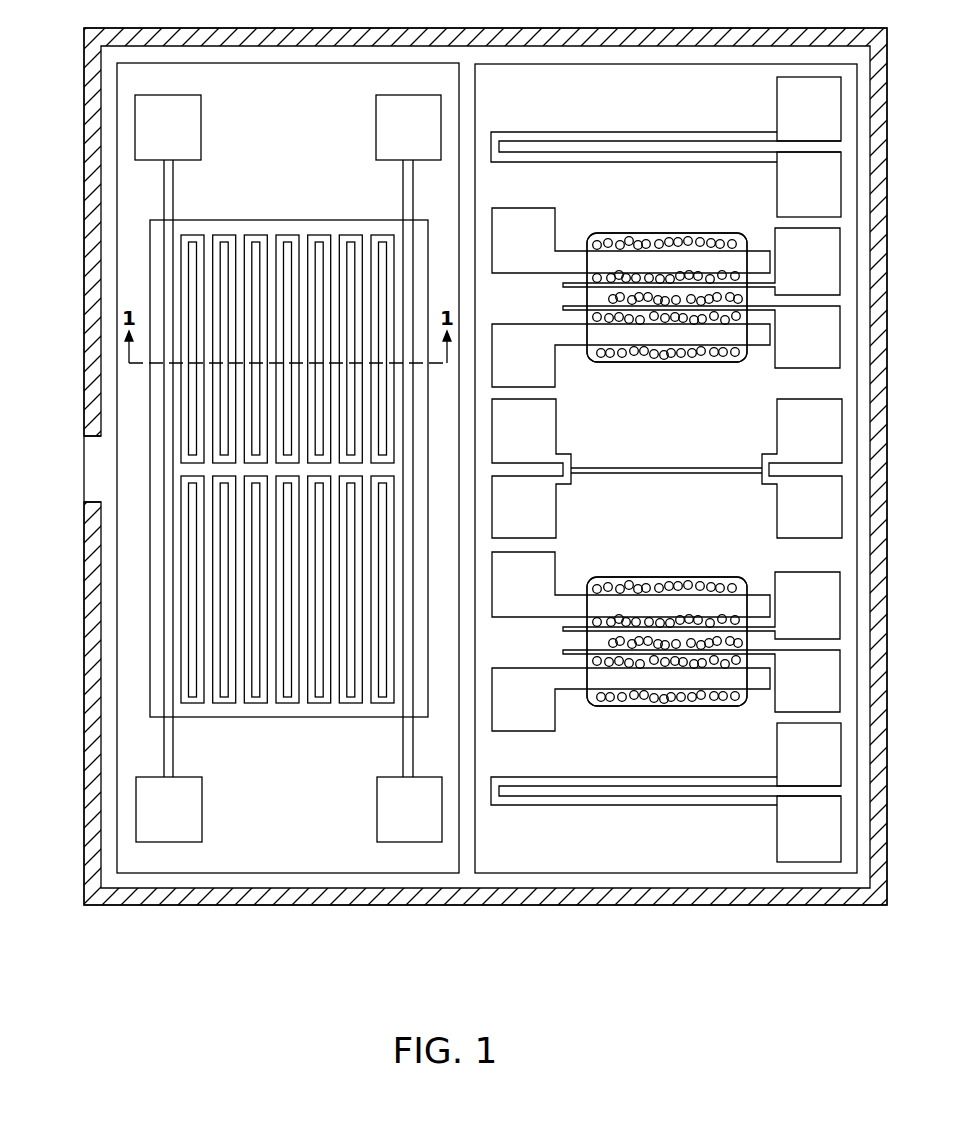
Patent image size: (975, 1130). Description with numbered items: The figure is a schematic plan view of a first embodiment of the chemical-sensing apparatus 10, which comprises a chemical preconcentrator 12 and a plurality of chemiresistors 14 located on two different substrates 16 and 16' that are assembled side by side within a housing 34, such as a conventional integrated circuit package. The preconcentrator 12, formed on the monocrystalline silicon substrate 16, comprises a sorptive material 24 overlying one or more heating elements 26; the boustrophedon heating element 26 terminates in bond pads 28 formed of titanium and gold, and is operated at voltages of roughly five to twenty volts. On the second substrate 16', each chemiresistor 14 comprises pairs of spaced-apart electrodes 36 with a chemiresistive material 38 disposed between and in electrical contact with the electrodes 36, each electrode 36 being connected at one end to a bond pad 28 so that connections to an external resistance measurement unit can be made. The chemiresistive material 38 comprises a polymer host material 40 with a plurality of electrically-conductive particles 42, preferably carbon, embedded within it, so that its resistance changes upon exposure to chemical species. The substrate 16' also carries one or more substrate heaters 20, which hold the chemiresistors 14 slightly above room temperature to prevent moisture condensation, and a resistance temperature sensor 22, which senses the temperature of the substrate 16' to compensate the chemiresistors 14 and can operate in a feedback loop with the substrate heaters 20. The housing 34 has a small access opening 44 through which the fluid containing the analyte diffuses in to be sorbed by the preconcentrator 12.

The chemical-sensing apparatus 10 is at (730, 911).
The chemical preconcentrator 12 is at (292, 205).
The chemiresistor 14 is at (666, 464).
The substrate 16 is at (288, 468).
The substrate 16' is at (666, 468).
The substrate heater 20 is at (551, 131).
The temperature sensor 22 is at (668, 466).
The sorptive material 24 is at (254, 718).
The heating element 26 is at (352, 237).
The bond pad 28 is at (375, 108).
The housing 34 is at (292, 906).
The electrode 36 is at (563, 320).
The chemiresistive material 38 is at (672, 363).
The polymer host material 40 is at (595, 243).
The electrically-conductive particles 42 is at (603, 357).
The access opening 44 is at (85, 468).